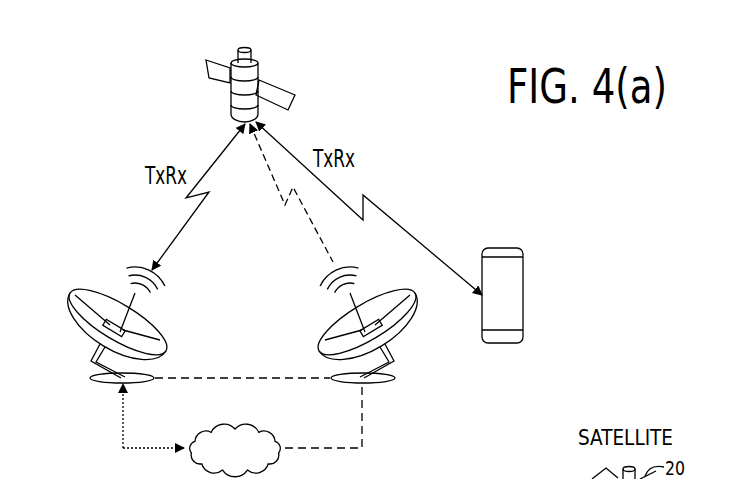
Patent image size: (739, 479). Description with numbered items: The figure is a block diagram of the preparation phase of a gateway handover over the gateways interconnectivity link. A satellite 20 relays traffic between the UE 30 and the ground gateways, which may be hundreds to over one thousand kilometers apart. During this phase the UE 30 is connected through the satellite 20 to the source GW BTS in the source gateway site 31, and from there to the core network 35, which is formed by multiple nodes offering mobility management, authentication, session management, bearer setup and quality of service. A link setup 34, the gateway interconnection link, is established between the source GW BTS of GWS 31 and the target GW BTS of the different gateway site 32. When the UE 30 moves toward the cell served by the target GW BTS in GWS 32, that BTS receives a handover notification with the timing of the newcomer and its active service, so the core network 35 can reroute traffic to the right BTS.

The satellite 20 is at (258, 62).
The UE 30 is at (523, 285).
The source gateway site (GWS) 31 is at (98, 372).
The target gateway site (GWS) 32 is at (392, 371).
The gateway interconnection link 34 is at (273, 380).
The core network 35 is at (207, 430).